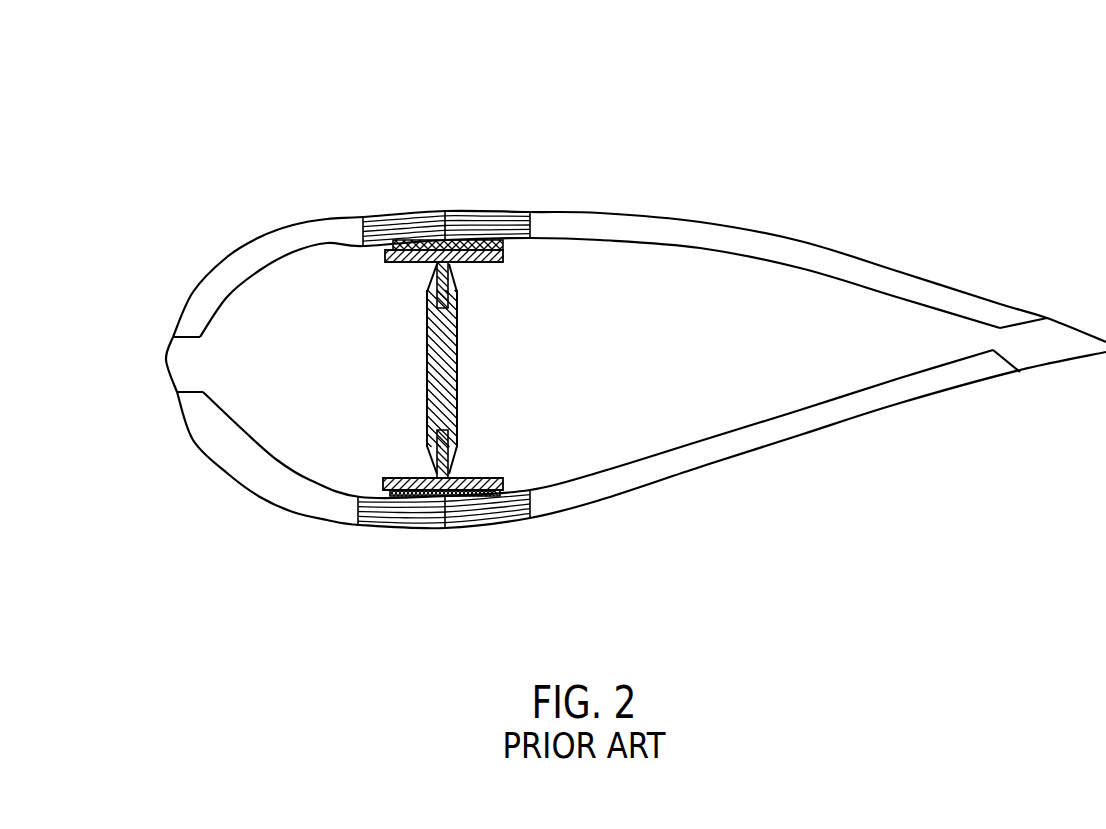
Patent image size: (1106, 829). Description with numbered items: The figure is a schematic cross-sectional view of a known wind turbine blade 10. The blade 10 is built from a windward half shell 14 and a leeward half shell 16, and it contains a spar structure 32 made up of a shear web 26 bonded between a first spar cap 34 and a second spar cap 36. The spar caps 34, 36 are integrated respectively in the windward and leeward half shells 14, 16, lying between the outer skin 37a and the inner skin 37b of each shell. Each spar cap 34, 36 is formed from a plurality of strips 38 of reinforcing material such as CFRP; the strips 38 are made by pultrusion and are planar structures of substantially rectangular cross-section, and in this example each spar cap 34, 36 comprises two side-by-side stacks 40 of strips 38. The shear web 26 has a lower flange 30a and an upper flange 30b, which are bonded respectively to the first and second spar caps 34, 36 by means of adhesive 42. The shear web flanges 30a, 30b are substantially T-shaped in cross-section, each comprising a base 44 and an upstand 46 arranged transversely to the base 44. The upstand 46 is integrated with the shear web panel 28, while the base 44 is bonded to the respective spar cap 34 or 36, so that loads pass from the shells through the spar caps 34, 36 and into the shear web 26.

The wind turbine blade 10 is at (303, 143).
The windward half shell 14 is at (641, 450).
The leeward half shell 16 is at (815, 243).
The shear web 26 is at (388, 376).
The shear web panel 28 is at (443, 370).
The lower flange 30a is at (410, 465).
The upper flange 30b is at (415, 278).
The spar structure 32 is at (555, 376).
The first spar cap 34 is at (442, 543).
The second spar cap 36 is at (447, 200).
The outer skin 37a is at (673, 479).
The inner skin 37b is at (652, 456).
The strips 38 is at (372, 228).
The stacks 40 is at (408, 220).
The adhesive 42 is at (420, 263).
The base 44 is at (497, 253).
The upstand 46 is at (448, 288).